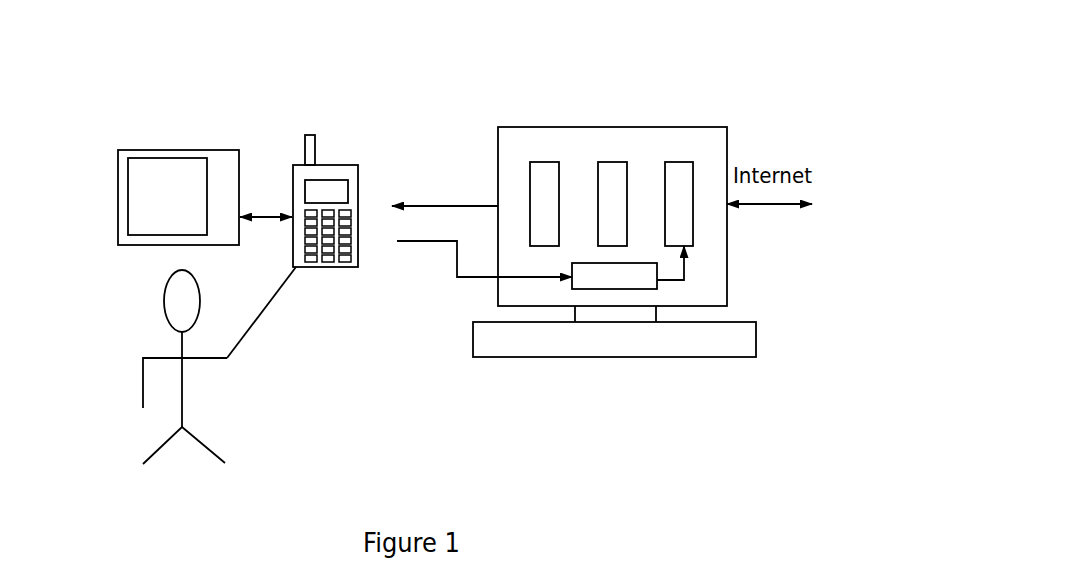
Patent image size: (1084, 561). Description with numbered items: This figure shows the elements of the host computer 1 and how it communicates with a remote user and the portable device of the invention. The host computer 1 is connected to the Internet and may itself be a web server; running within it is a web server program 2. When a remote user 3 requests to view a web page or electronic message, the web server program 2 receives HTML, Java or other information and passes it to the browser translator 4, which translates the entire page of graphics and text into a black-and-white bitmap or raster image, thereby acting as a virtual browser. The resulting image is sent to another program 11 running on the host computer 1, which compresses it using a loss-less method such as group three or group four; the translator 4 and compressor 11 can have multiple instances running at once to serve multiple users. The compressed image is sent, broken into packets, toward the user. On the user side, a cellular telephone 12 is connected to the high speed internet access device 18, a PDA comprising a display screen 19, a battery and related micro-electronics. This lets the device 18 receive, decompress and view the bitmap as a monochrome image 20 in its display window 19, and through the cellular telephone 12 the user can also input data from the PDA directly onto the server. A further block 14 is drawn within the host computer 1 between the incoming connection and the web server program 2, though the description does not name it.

The host computer 1 is at (614, 280).
The web server program 2 is at (750, 148).
The remote user 3 is at (217, 367).
The browser translator 4 is at (677, 143).
The compression program 11 is at (598, 140).
The cellular telephone 12 is at (376, 149).
The module connected to translator 14 is at (586, 320).
The high speed internet access device 18 is at (123, 240).
The display screen 19 is at (220, 150).
The monochrome image 20 is at (100, 218).